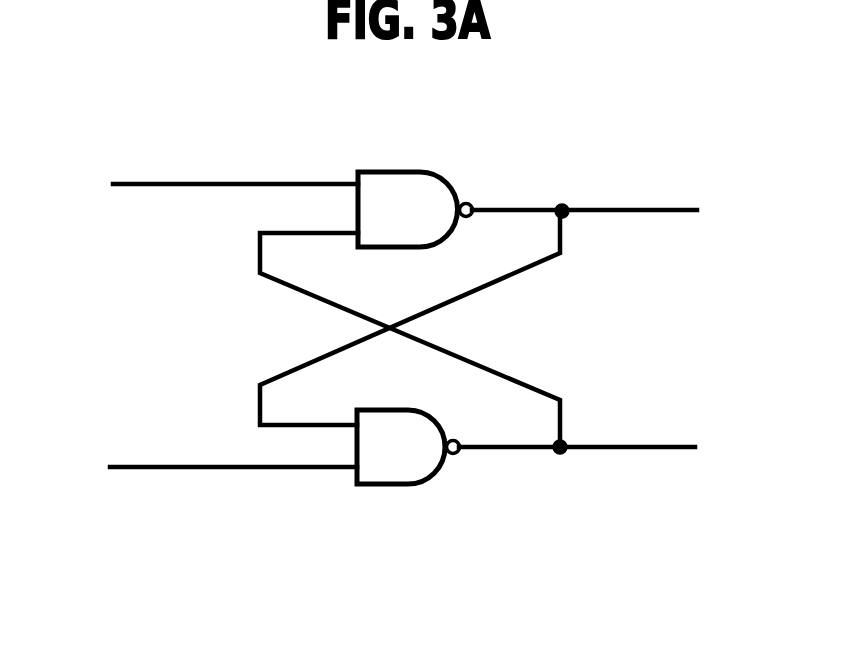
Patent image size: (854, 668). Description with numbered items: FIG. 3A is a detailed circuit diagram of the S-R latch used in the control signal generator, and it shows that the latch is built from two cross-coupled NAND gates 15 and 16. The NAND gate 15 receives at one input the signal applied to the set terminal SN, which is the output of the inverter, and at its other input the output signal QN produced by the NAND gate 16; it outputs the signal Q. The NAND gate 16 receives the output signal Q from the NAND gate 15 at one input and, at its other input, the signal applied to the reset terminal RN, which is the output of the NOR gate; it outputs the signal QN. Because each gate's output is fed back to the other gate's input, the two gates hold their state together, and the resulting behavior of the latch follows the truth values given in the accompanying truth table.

The NAND gate 15 is at (420, 184).
The NAND gate 16 is at (411, 478).
The set terminal SN is at (212, 183).
The reset terminal RN is at (211, 469).
The output signal Q is at (599, 212).
The output signal QN is at (599, 451).